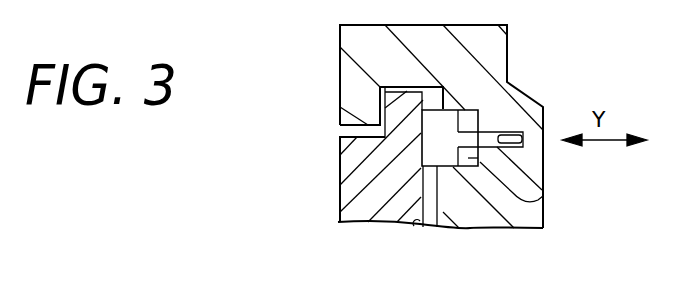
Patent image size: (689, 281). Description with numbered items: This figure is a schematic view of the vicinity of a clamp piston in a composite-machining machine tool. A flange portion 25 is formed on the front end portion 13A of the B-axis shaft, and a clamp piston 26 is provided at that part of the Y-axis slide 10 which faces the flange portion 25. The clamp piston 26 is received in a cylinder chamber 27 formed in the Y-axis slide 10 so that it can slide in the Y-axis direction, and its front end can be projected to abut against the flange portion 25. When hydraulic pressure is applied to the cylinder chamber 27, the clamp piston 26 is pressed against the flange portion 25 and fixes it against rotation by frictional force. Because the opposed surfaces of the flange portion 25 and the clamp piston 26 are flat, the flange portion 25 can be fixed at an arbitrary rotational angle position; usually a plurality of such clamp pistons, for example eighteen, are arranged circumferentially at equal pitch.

The Y-axis slide 10 is at (500, 44).
The flange portion 25 is at (403, 110).
The front end portion of the B-axis shaft 13A is at (350, 193).
The clamp piston 26 is at (444, 155).
The cylinder chamber 27 is at (543, 196).